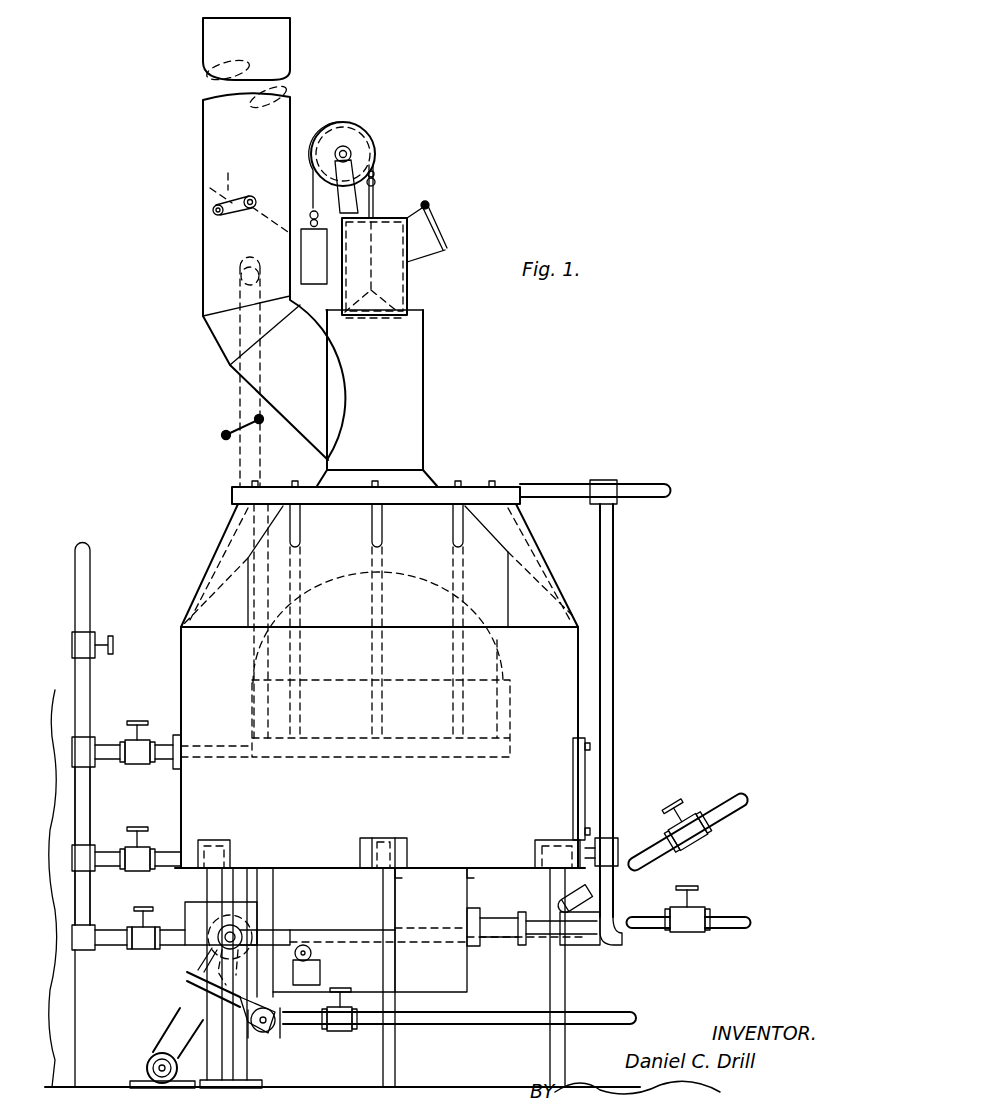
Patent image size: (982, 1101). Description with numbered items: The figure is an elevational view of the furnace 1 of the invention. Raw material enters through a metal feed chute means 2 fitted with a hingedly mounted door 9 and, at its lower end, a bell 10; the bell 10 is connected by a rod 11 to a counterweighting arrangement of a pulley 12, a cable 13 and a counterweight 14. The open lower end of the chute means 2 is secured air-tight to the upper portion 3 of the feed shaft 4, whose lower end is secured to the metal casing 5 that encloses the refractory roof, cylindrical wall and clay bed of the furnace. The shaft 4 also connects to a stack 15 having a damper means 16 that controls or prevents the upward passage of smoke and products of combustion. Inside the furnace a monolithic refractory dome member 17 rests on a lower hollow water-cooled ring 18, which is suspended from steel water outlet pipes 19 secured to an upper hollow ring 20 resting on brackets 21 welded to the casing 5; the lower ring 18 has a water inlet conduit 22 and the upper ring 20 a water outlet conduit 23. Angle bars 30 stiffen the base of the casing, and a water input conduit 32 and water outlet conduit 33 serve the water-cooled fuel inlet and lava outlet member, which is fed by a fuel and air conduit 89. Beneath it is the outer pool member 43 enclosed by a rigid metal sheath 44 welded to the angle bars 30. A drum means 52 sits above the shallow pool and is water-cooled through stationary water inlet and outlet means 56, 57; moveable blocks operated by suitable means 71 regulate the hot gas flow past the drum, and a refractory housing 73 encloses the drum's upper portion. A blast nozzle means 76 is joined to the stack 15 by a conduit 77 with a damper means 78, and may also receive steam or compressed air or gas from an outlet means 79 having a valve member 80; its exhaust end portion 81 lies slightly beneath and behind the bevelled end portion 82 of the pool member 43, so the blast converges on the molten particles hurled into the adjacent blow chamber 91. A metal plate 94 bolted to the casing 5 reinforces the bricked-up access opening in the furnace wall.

The furnace 1 is at (582, 651).
The feed chute means 2 is at (407, 278).
The upper portion of feed shaft 3 is at (410, 308).
The feed shaft 4 is at (424, 380).
The metal casing 5 is at (438, 478).
The door 9 is at (436, 226).
The bell 10 is at (403, 298).
The rod 11 is at (378, 200).
The pulley 12 is at (370, 136).
The cable 13 is at (312, 175).
The counterweight 14 is at (314, 284).
The stack 15 is at (205, 235).
The damper means 16 is at (226, 172).
The refractory dome member 17 is at (482, 640).
The lower hollow steel water-cooled ring 18 is at (484, 758).
The water outlet pipes 19 is at (452, 526).
The upper hollow ring 20 is at (512, 486).
The brackets 21 is at (215, 545).
The water inlet conduit 22 is at (162, 740).
The water outlet conduit 23 is at (562, 486).
The angle bars 30 is at (345, 870).
The water input conduit 32 is at (168, 850).
The water outlet conduit 33 is at (598, 836).
The outer pool member 43 is at (470, 963).
The rigid metal sheath 44 is at (450, 978).
The drum means 52 is at (208, 898).
The stationary water inlet means 56 is at (172, 930).
The stationary water outlet means 57 is at (288, 932).
The block moving means 71 is at (320, 965).
The refractory housing 73 is at (240, 905).
The blast nozzle means 76 is at (200, 1000).
The conduit 77 is at (240, 460).
The damper means 78 is at (232, 428).
The steam or compressed air or gas outlet means 79 is at (304, 1026).
The valve member 80 is at (343, 1032).
The exhaust end portion 81 is at (186, 983).
The bevelled end portion 82 is at (190, 968).
The fuel and air conduit 89 is at (562, 905).
The blow chamber 91 is at (76, 1005).
The metal plate 94 is at (590, 760).